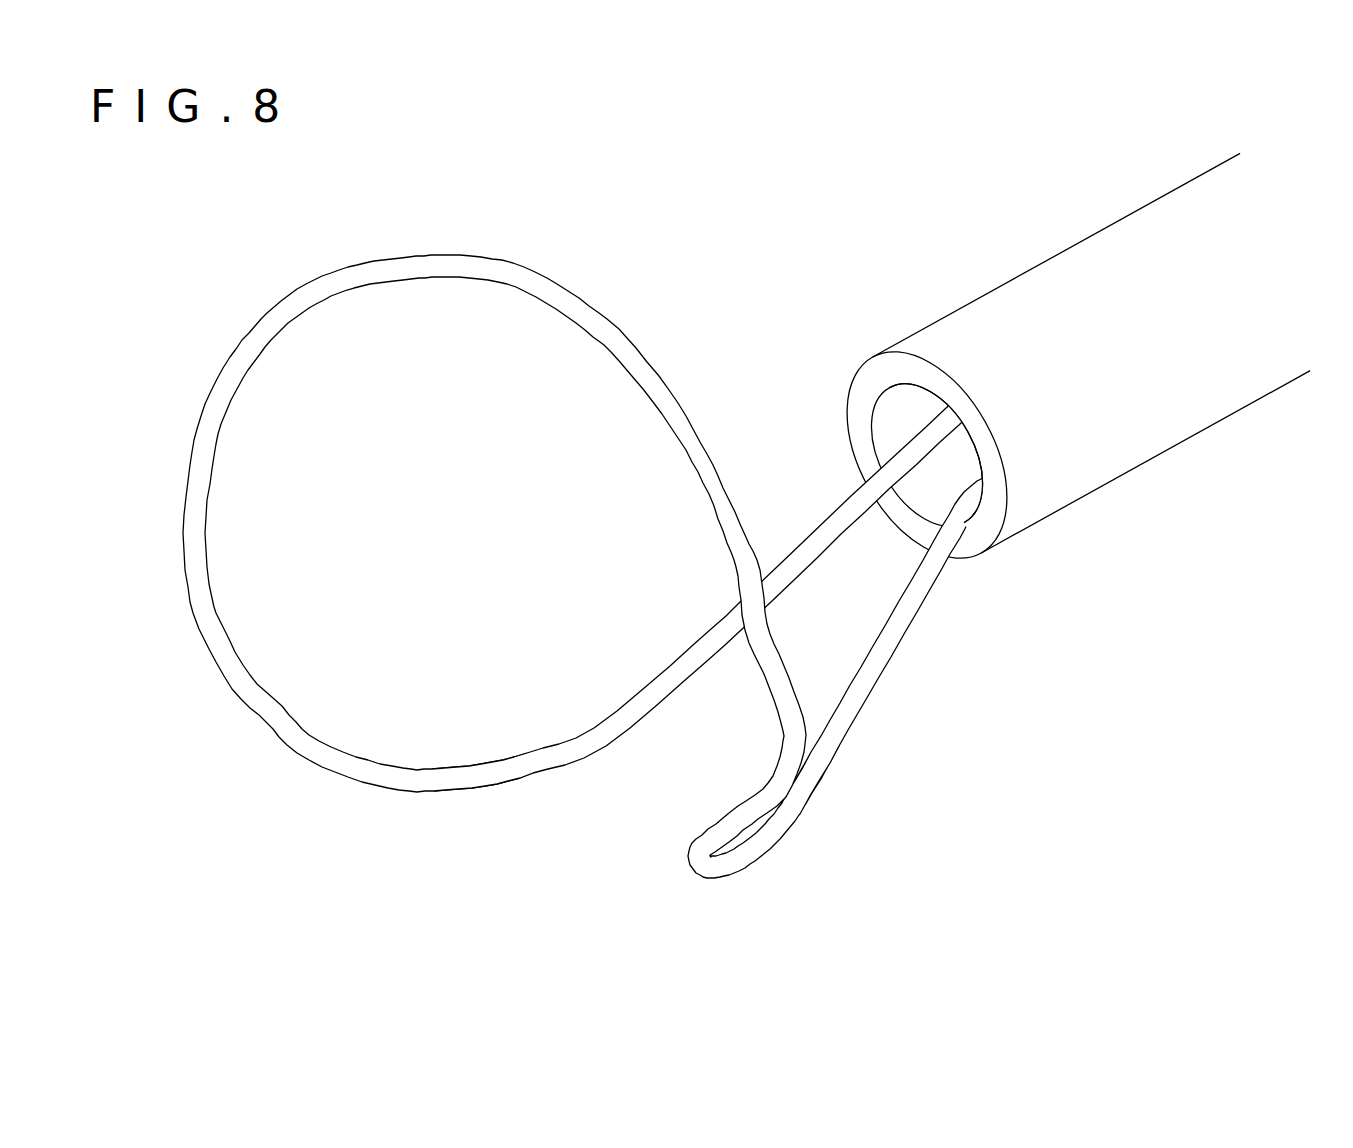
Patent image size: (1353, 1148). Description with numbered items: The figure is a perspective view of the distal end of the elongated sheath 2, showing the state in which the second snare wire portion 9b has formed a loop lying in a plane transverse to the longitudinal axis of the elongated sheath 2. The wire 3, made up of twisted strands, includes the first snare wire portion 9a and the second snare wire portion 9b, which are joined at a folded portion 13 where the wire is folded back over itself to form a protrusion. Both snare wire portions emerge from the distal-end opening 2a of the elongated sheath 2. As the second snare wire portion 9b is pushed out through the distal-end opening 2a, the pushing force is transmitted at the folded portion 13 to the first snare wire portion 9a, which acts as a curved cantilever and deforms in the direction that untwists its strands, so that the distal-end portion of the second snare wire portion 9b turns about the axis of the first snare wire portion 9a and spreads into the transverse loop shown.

The elongated sheath 2 is at (1043, 292).
The distal-end opening 2a is at (895, 407).
The wire 3 is at (596, 531).
The first snare wire portion 9a is at (864, 708).
The second snare wire portion 9b is at (516, 266).
The folded portion 13 is at (688, 856).